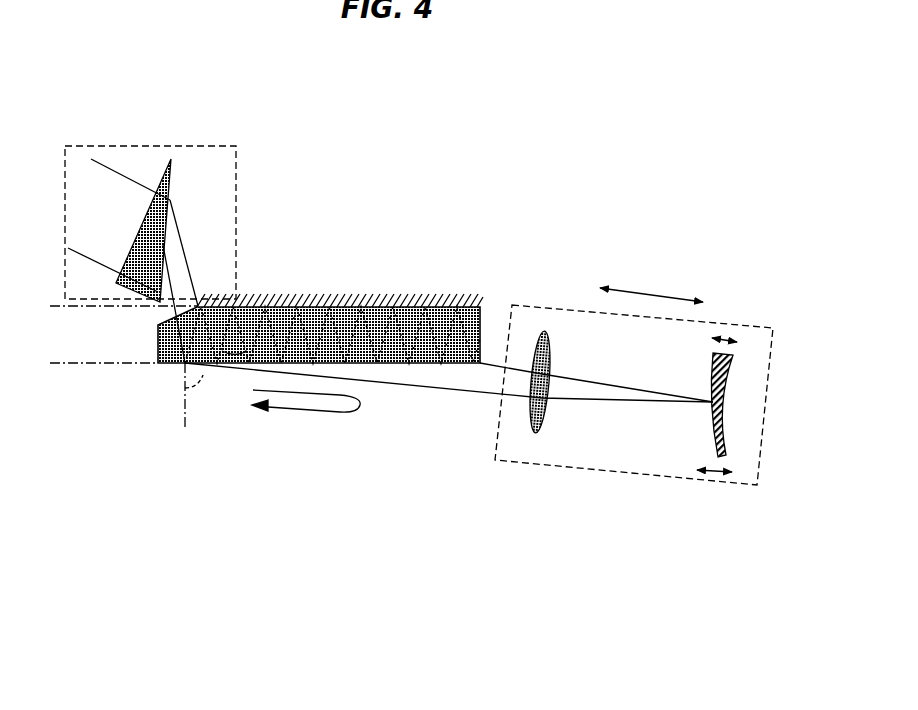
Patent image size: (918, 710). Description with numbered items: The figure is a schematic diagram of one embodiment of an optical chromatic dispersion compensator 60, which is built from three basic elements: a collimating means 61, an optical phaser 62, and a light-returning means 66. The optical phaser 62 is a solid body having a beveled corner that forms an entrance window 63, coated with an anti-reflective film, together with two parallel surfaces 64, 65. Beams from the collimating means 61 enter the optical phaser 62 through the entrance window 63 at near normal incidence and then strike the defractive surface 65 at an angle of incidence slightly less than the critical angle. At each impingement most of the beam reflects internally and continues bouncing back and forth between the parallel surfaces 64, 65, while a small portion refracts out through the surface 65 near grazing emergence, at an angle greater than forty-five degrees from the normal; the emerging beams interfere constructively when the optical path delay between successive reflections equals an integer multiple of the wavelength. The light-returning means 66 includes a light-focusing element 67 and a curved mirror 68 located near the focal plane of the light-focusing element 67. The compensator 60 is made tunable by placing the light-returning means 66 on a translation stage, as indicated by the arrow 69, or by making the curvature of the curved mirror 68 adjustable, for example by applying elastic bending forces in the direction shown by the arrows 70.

The optical chromatic dispersion compensator 60 is at (328, 180).
The collimating means 61 is at (188, 145).
The optical phaser 62 is at (447, 312).
The entrance window 63 is at (196, 308).
The parallel surface 64 is at (350, 305).
The defractive surface 65 is at (390, 365).
The light-returning means 66 is at (532, 305).
The light-focusing element 67 is at (535, 433).
The curved mirror 68 is at (707, 437).
The arrow indicating translation of the light-returning means 69 is at (642, 292).
The arrows indicating bending forces on the curved mirror 70 is at (742, 337).